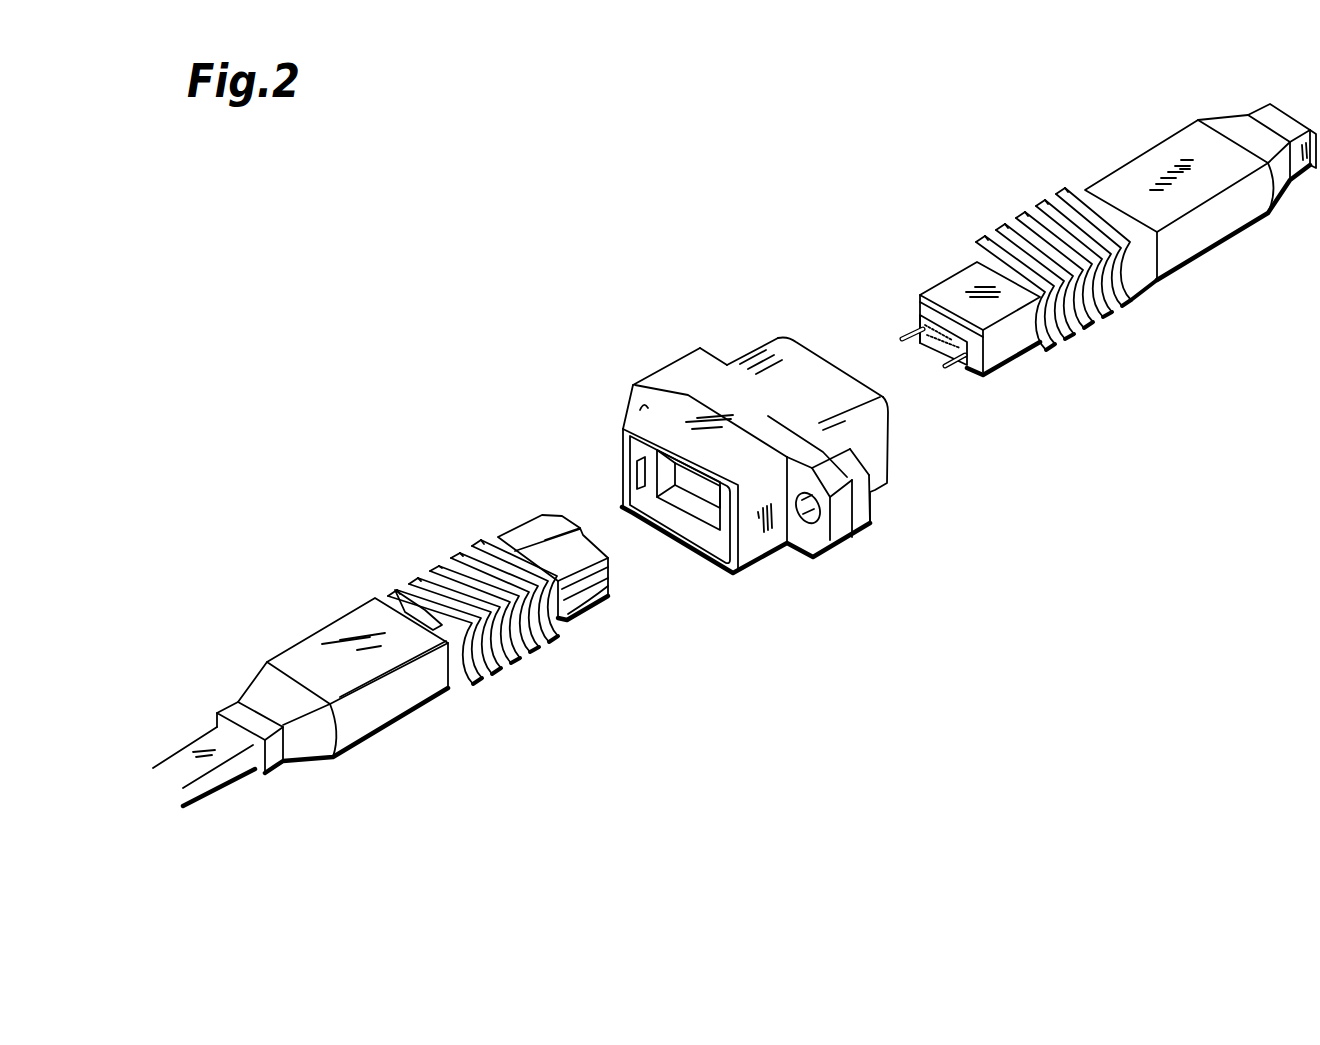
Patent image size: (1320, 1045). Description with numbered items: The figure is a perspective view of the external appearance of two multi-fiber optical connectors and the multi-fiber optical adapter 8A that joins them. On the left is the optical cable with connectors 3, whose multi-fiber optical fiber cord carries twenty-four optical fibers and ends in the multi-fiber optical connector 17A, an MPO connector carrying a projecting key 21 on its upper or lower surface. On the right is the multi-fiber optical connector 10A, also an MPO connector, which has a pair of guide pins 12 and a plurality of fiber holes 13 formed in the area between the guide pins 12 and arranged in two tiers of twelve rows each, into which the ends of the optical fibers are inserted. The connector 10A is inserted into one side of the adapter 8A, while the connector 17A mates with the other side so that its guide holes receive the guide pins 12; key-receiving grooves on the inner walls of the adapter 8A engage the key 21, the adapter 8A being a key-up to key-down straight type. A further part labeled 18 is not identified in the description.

The optical cable with connectors 3 is at (318, 586).
The multi-fiber optical connector 17A is at (430, 553).
The key 21 is at (547, 540).
The optical fiber cable 18 is at (183, 767).
The multi-fiber optical adapter 8A is at (684, 347).
The multi-fiber optical connector 10A is at (1010, 220).
The fiber holes 13 is at (935, 326).
The guide pins 12 is at (905, 332).